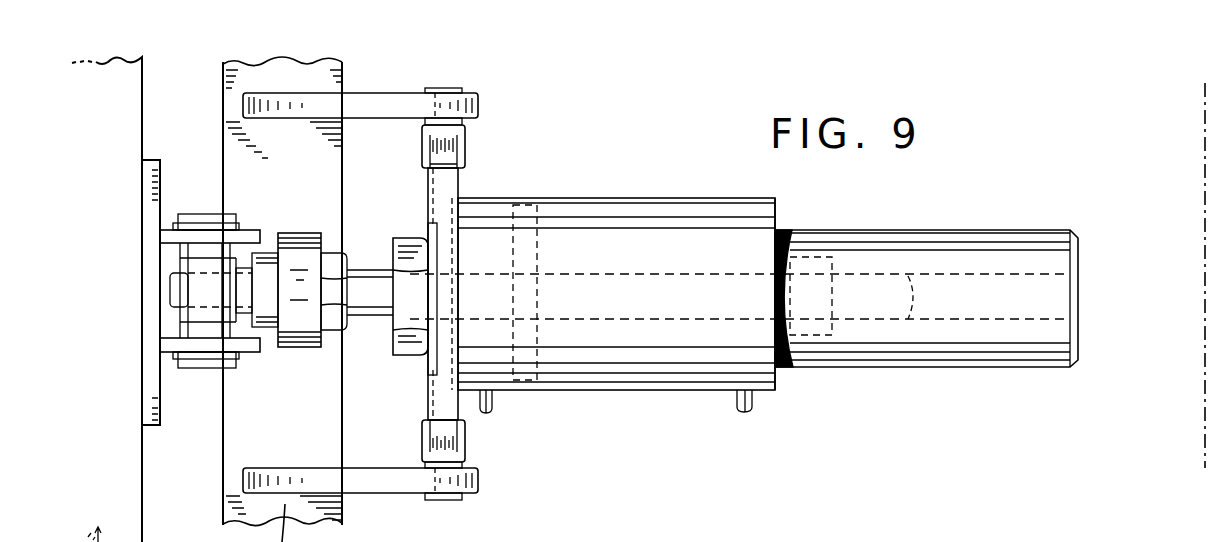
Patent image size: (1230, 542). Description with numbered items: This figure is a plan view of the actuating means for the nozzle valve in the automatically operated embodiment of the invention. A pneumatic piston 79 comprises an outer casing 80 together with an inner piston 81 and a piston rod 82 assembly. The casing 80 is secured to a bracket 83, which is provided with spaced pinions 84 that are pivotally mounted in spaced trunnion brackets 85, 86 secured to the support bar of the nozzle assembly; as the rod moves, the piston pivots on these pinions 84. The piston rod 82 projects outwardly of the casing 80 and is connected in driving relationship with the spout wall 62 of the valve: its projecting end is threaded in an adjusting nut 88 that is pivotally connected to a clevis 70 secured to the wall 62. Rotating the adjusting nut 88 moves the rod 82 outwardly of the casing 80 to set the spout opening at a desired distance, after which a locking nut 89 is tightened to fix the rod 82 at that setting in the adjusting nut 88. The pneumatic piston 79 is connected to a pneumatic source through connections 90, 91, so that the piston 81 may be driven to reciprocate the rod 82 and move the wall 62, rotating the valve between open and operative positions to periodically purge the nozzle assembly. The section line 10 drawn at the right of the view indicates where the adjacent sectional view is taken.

The section line 10- 10 is at (1163, 468).
The spout wall 62 is at (142, 483).
The clevis member 70 is at (227, 280).
The pneumatic piston 79 is at (1080, 224).
The outer casing 80 is at (753, 232).
The inner piston 81 is at (538, 236).
The piston rod 82 is at (365, 285).
The bracket 83 is at (447, 184).
The pinions 84 is at (467, 138).
The trunnion bracket 85 is at (390, 482).
The trunnion bracket 86 is at (388, 105).
The adjusting nut 88 is at (293, 330).
The locking nut 89 is at (337, 323).
The connection 90 is at (493, 403).
The connection 91 is at (750, 403).